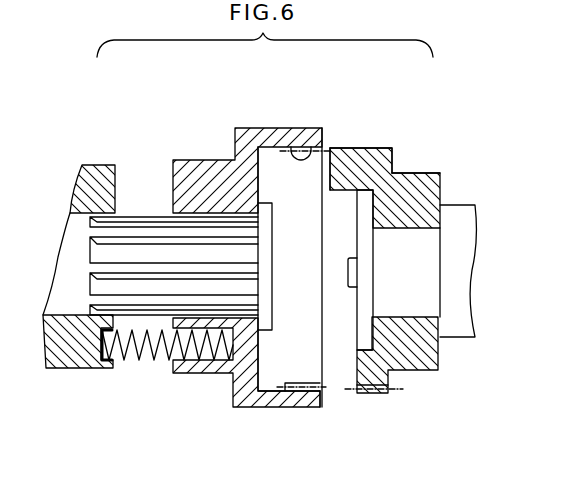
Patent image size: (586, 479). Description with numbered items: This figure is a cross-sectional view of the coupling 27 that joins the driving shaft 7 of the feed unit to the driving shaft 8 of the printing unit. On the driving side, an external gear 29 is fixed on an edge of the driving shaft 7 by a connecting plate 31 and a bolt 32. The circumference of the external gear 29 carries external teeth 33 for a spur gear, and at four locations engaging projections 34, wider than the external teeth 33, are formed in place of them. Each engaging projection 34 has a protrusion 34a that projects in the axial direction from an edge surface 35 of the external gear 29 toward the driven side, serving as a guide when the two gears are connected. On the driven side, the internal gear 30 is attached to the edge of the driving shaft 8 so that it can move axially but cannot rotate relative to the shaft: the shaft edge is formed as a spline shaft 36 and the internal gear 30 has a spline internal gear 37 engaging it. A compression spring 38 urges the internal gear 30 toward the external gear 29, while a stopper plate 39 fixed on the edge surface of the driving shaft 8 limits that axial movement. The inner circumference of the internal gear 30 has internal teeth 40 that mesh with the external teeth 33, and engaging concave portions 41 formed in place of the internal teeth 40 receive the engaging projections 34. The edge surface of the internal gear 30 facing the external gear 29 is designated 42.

The driving shaft 7 is at (462, 215).
The driving shaft 8 is at (100, 165).
The coupling 27 is at (333, 141).
The external gear 29 is at (417, 168).
The internal gear 30 is at (268, 128).
The connecting plate 31 is at (358, 297).
The bolt 32 is at (347, 268).
The external teeth 33 is at (385, 394).
The engaging projections 34 is at (388, 147).
The protrusions 34a is at (336, 158).
The edge surface 35 is at (357, 357).
The spline shaft 36 is at (128, 250).
The spline internal gear 37 is at (190, 228).
The compression spring 38 is at (145, 352).
The stopper plate 39 is at (278, 316).
The internal teeth 40 is at (297, 393).
The engaging concave portions 41 is at (307, 157).
The edge surface 42 is at (319, 396).